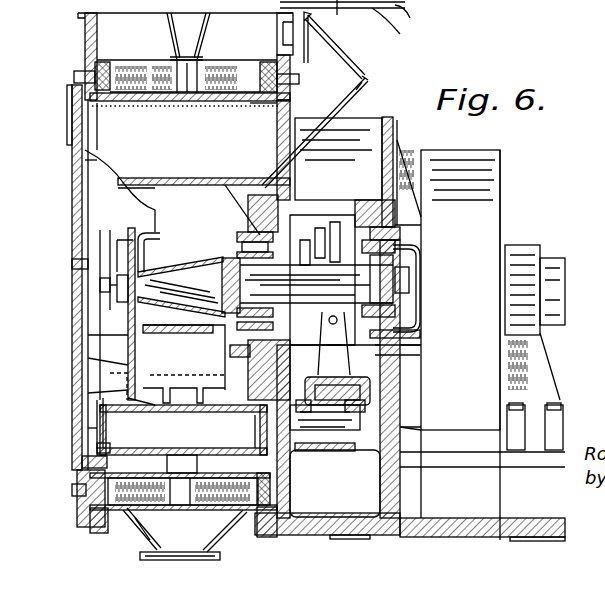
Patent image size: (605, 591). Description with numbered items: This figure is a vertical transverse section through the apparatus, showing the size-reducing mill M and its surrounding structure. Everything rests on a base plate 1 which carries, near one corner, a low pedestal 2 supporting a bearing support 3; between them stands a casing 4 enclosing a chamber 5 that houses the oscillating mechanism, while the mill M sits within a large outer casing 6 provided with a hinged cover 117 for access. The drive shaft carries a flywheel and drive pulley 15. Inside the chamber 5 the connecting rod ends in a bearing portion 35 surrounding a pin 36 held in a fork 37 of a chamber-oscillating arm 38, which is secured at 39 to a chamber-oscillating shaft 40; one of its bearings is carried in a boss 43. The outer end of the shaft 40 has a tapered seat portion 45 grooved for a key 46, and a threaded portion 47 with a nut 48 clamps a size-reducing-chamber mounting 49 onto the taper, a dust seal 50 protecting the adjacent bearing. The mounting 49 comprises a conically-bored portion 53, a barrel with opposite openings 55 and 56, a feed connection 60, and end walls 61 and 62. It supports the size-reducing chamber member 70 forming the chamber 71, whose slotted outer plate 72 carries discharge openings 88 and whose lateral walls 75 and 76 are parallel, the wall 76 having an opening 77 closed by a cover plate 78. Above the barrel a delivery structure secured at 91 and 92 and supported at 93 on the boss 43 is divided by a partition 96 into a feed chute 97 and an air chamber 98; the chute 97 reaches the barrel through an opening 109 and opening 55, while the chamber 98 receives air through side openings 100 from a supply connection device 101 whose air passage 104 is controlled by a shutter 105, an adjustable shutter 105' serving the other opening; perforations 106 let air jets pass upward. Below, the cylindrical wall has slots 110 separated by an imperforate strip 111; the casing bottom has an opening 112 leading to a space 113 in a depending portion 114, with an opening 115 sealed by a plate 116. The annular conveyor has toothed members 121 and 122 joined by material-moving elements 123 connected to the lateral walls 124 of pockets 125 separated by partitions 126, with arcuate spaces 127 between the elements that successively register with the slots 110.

The base plate 1 is at (474, 538).
The pedestal 2 is at (525, 485).
The bearing support 3 is at (540, 372).
The casing 4 is at (392, 126).
The chamber 5 is at (362, 440).
The outer casing or shell member 6 is at (85, 55).
The flywheel and drive pulley 15 is at (506, 196).
The bearing portion 35 is at (340, 446).
The pin 36 is at (337, 405).
The fork 37 is at (408, 400).
The chamber-oscillating arm 38 is at (420, 341).
The securing point 39 is at (352, 228).
The chamber-oscillating shaft 40 is at (410, 281).
The boss 43 is at (258, 200).
The tapered seat portion 45 is at (128, 243).
The key 46 is at (190, 262).
The threaded portion 47 is at (100, 285).
The nut 48 is at (117, 292).
The size-reducing-chamber mounting 49 is at (88, 338).
The dust seal 50 is at (225, 258).
The conically-bored portion 53 is at (133, 326).
The opening 55 is at (165, 255).
The opening 56 is at (168, 370).
The feed connection 60 is at (142, 380).
The end wall 61 is at (88, 358).
The end wall 62 is at (230, 352).
The size-reducing chamber member 70 is at (184, 398).
The size-reducing chamber 71 is at (330, 470).
The outer perforated plate 72 is at (90, 458).
The lateral wall 75 is at (262, 432).
The lateral wall 76 is at (100, 446).
The opening 77 is at (103, 403).
The cover plate 78 is at (97, 430).
The discharge openings 88 is at (160, 454).
The securing point 91 is at (85, 181).
The securing point 92 is at (292, 192).
The support point 93 is at (246, 200).
The partition 96 is at (180, 178).
The material feed chute 97 is at (147, 186).
The chamber 98 is at (85, 158).
The openings 100 is at (90, 136).
The supply connection device 101 is at (362, 88).
The initial air delivery passage 104 is at (371, 83).
The shutter 105 is at (350, 45).
The adjustable shutter 105' is at (46, 115).
The perforations 106 is at (142, 103).
The opening 109 is at (90, 155).
The elongated slots 110 is at (100, 482).
The imperforate strip 111 is at (246, 520).
The opening 112 is at (125, 518).
The space 113 is at (180, 546).
The depending portion 114 is at (138, 540).
The opening 115 is at (418, 16).
The plate 116 is at (405, 27).
The hinged cover 117 is at (72, 264).
The annular toothed member 121 is at (88, 35).
The annular toothed member 122 is at (258, 104).
The material-moving elements 123 is at (240, 66).
The lateral walls 124 is at (196, 62).
The pockets 125 is at (185, 70).
The partitions 126 is at (189, 94).
The arcuate pockets or spaces 127 is at (125, 72).
The mill M is at (88, 393).